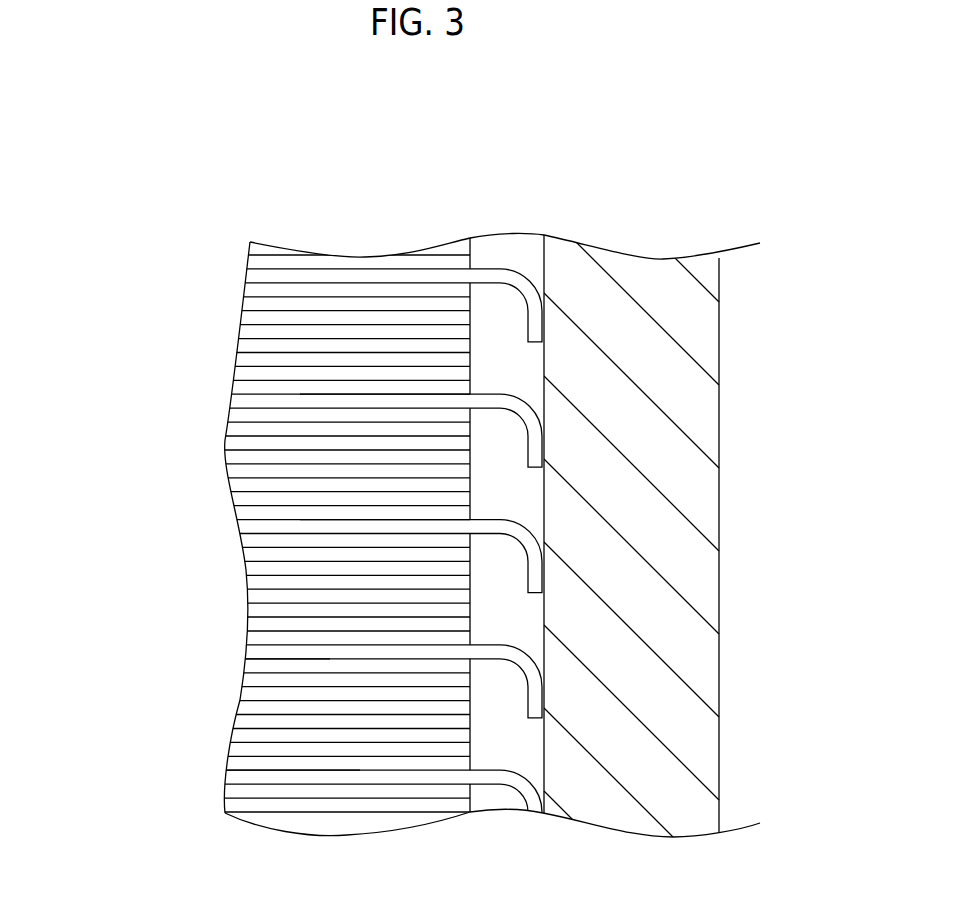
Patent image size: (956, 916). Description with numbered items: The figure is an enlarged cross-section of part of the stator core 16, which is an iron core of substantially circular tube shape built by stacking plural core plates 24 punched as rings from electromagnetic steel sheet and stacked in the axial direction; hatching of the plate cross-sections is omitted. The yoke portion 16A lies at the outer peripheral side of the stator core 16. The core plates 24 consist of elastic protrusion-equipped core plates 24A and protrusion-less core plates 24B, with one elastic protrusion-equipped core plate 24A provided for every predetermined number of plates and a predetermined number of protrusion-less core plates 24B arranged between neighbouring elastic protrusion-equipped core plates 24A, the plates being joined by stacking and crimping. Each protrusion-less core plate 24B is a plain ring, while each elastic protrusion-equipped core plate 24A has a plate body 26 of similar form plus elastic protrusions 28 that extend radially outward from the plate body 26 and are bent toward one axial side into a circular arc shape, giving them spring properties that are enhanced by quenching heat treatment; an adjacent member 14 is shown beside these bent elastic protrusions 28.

The core body / base member 14 is at (720, 495).
The stator core 16 is at (295, 577).
The yoke portion 16A is at (387, 818).
The core plates 24 is at (258, 525).
The elastic protrusion-equipped core plate 24A is at (253, 273).
The protrusion-less core plate 24B is at (247, 345).
The plate body 26 is at (396, 520).
The elastic protrusions 28 is at (497, 271).